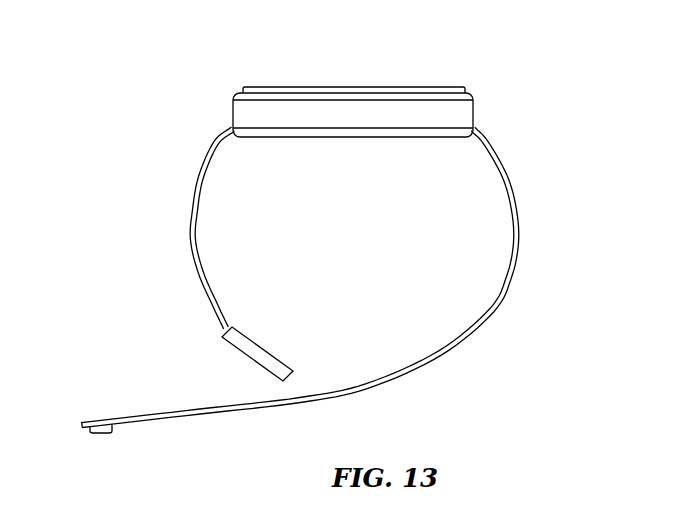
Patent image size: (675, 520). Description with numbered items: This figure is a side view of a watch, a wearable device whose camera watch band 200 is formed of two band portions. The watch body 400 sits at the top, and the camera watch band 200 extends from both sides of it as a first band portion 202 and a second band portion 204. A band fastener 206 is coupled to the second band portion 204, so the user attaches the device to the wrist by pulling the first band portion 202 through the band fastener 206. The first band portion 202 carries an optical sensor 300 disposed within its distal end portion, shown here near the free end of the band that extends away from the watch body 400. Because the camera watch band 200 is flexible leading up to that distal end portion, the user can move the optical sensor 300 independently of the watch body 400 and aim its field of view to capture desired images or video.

The watch body 400 is at (436, 110).
The camera watch band 200 is at (350, 277).
The first band portion 202 is at (517, 234).
The second band portion 204 is at (190, 238).
The band fastener 206 is at (228, 345).
The optical sensor 300 is at (95, 433).